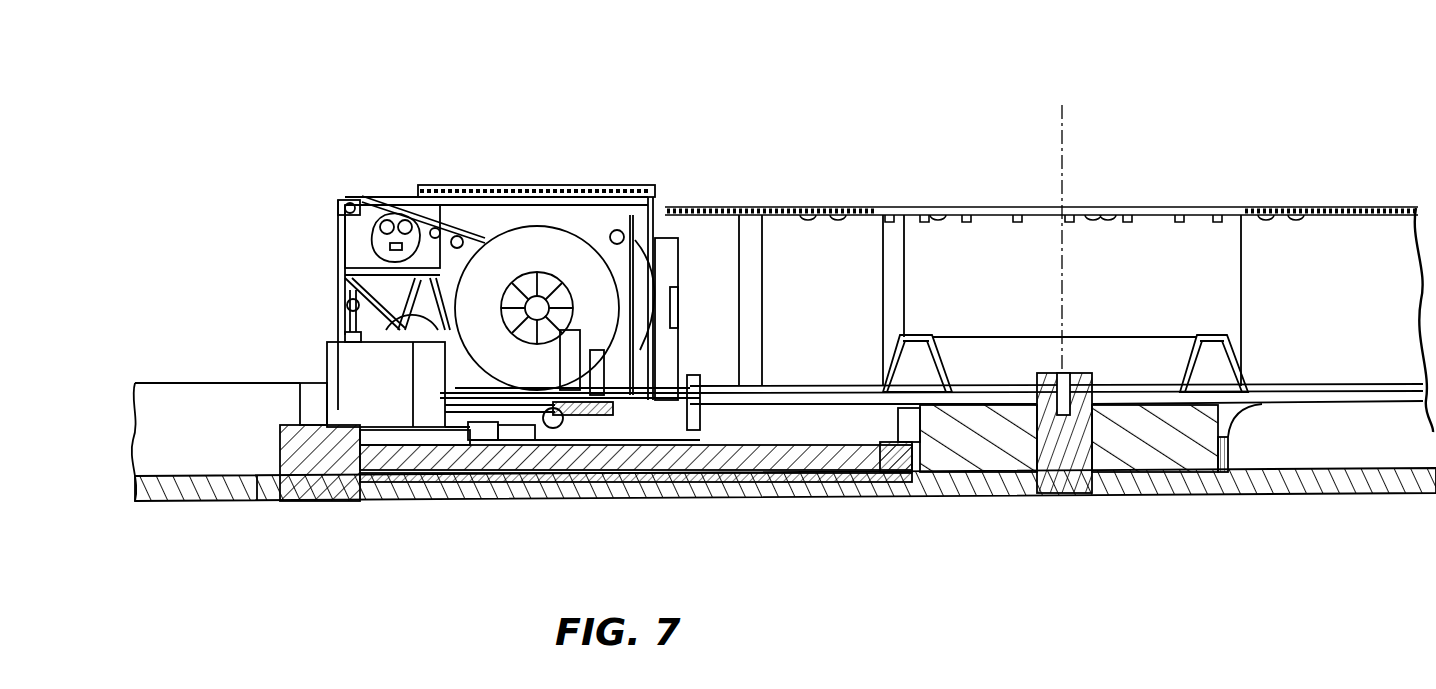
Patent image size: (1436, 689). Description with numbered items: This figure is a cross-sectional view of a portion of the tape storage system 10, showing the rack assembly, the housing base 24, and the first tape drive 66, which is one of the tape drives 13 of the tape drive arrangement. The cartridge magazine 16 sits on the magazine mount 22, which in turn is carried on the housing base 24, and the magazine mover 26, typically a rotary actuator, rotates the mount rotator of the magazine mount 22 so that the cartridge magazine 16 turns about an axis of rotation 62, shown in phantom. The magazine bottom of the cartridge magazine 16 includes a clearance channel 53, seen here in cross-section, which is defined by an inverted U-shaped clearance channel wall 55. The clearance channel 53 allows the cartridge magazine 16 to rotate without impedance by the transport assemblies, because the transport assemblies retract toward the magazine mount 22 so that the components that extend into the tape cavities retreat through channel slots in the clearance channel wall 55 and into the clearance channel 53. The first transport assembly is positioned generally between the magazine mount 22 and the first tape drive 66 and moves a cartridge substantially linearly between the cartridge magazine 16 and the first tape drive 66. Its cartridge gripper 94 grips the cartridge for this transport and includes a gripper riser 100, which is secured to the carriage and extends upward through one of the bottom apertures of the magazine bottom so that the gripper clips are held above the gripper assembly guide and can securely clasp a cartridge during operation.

The tape storage system 10 is at (1115, 108).
The tape drive 13 is at (513, 275).
The first tape drive 66 is at (493, 185).
The cartridge magazine 16 is at (1193, 205).
The magazine mount 22 is at (1138, 478).
The housing base 24 is at (1346, 483).
The magazine mover 26 is at (1047, 447).
The clearance channel 53 is at (908, 368).
The clearance channel wall 55 is at (920, 335).
The axis of rotation 62 is at (1065, 232).
The cartridge gripper 94 is at (688, 333).
The gripper riser 100 is at (694, 384).